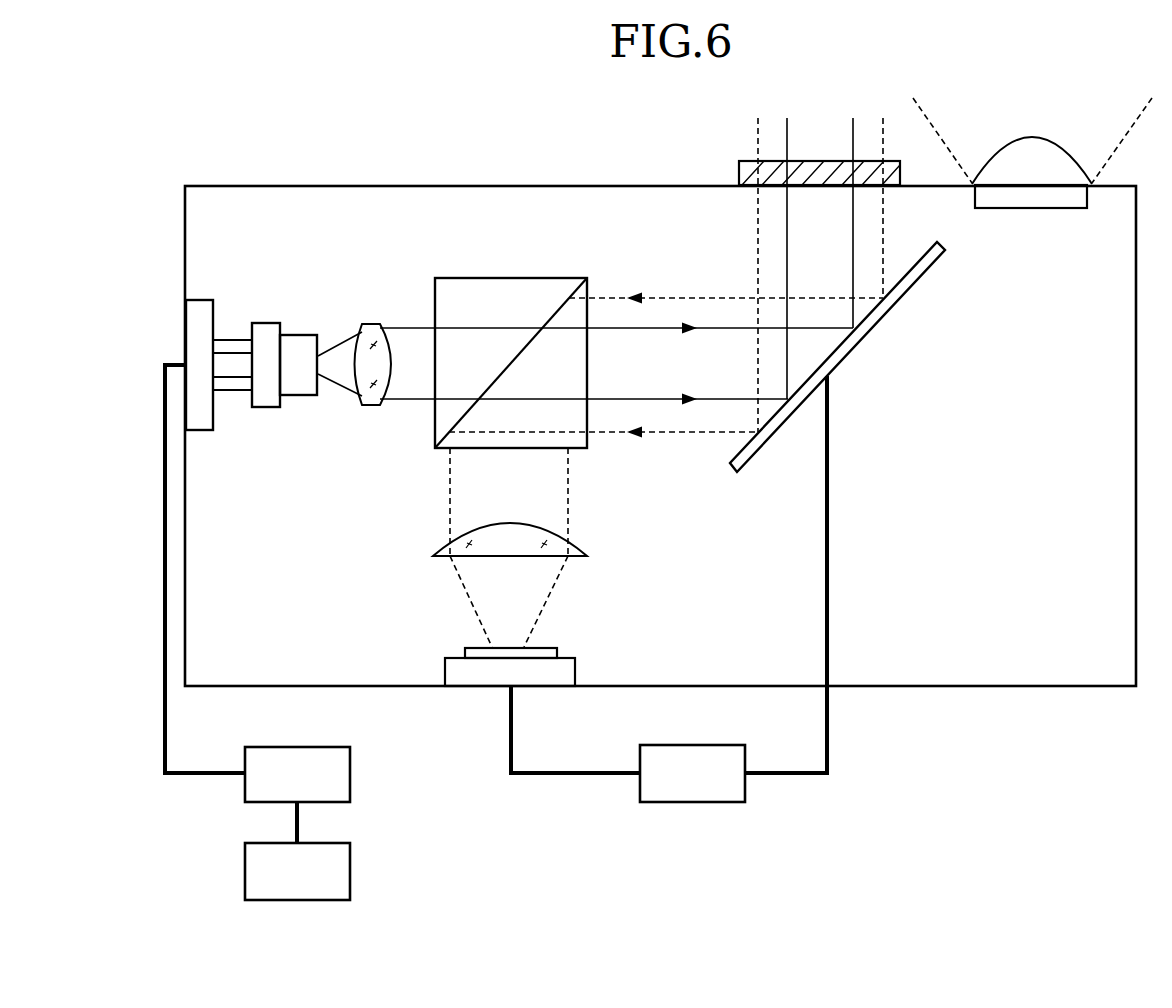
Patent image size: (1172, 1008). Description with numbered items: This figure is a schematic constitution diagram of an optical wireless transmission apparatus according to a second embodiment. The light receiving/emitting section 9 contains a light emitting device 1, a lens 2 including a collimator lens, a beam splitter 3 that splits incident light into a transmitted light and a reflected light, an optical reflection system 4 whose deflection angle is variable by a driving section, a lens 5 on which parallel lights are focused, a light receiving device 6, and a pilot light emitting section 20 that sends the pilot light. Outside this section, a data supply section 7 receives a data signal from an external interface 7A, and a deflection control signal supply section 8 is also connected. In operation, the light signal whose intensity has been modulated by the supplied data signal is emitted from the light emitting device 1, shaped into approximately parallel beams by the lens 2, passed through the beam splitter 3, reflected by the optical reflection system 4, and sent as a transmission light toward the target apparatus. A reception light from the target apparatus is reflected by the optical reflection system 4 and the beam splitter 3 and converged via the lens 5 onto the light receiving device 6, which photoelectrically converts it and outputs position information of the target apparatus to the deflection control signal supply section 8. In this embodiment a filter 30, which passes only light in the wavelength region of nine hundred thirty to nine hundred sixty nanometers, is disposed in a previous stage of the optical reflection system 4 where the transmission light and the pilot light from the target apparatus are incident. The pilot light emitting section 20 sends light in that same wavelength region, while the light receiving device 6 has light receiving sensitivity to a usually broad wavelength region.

The light emitting device 1 is at (265, 332).
The lens 2 is at (388, 350).
The beam splitter 3 is at (490, 283).
The optical reflection system 4 is at (878, 315).
The lens 5 is at (574, 548).
The light receiving device 6 is at (555, 648).
The data supply section 7 is at (340, 772).
The external interface 7A is at (340, 875).
The deflection control signal supply section 8 is at (688, 795).
The light receiving/emitting section 9 is at (937, 688).
The pilot light emitting section 20 is at (1035, 200).
The filter 30 is at (810, 170).